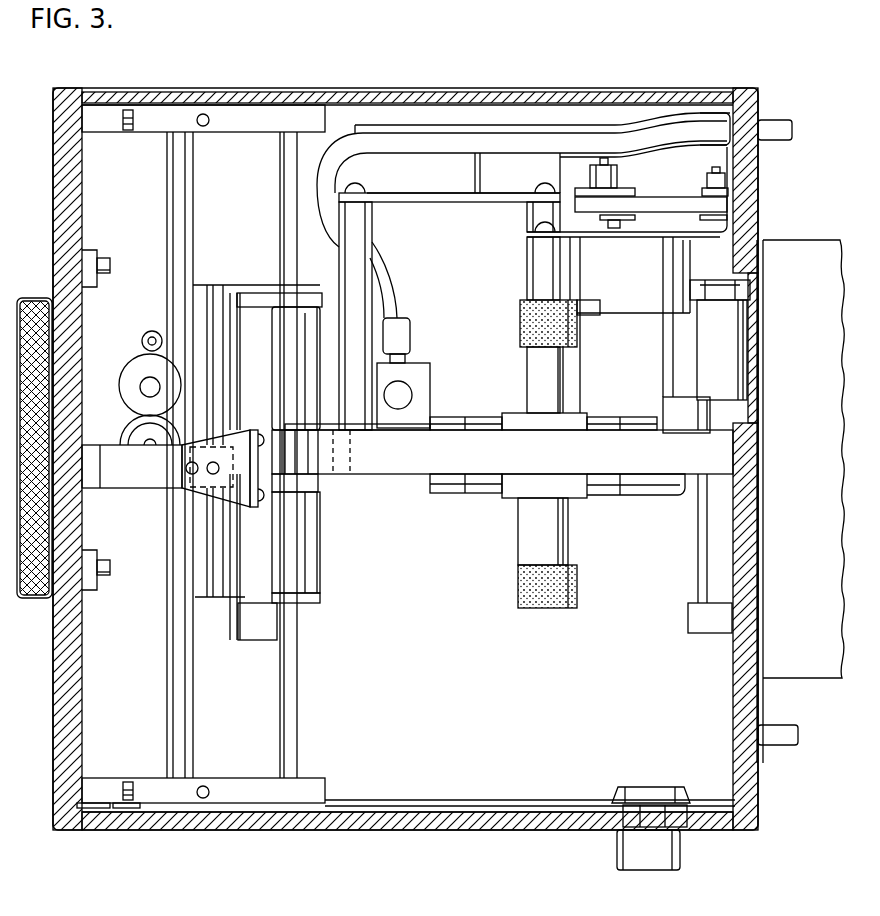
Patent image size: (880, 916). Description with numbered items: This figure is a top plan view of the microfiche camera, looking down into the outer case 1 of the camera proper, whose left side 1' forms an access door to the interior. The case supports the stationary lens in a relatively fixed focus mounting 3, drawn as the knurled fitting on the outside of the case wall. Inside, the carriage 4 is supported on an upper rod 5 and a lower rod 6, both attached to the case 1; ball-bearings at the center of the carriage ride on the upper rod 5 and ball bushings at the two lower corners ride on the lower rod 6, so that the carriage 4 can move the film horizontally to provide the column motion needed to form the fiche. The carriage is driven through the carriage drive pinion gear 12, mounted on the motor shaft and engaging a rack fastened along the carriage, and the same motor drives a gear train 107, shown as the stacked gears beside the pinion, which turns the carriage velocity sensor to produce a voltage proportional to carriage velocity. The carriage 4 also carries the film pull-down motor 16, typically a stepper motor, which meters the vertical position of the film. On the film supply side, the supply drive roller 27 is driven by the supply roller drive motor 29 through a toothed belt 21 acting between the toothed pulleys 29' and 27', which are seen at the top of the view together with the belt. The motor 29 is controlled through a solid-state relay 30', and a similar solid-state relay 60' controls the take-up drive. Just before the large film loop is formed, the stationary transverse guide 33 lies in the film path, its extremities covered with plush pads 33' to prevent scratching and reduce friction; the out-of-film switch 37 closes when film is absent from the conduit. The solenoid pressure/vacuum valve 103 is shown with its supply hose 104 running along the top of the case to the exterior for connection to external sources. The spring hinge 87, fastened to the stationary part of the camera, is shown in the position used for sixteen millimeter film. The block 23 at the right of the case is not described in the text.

The outer case 1 is at (415, 459).
The left side of the outer case 1' is at (408, 828).
The fixed focus mounting 3 is at (37, 598).
The carriage 4 is at (215, 290).
The upper rod 5 is at (190, 168).
The lower rod 6 is at (282, 182).
The carriage drive pinion gear 12 is at (134, 434).
The film pull-down motor 16 is at (294, 546).
The toothed belt 21 is at (678, 198).
The external block 23 is at (820, 269).
The supply drive roller 27 is at (719, 456).
The toothed pulley 27' is at (705, 176).
The supply roller drive motor 29 is at (608, 325).
The toothed pulley 29' is at (615, 177).
The solid-state relay 30' is at (449, 291).
The stationary transverse guide 33 is at (544, 489).
The plush pads 33' is at (546, 454).
The out-of-film switch 37 is at (700, 425).
The solid-state relay 60' is at (520, 192).
The spring hinge 87 is at (628, 493).
The solenoid pressure/vacuum valve 103 is at (430, 368).
The pressure and vacuum supply hose 104 is at (523, 180).
The gear train 107 is at (150, 373).